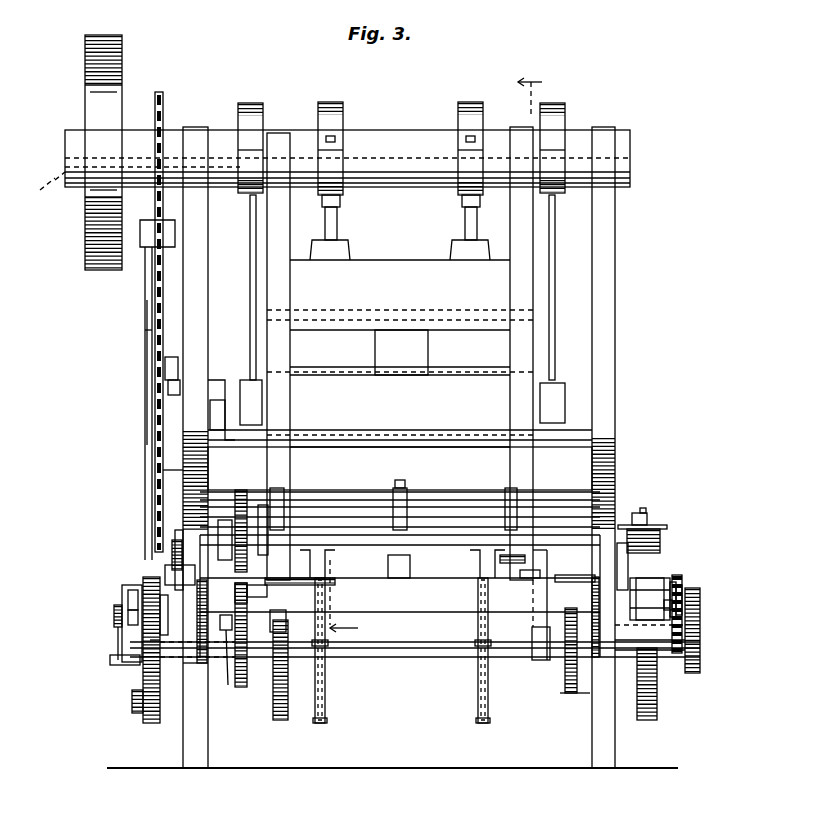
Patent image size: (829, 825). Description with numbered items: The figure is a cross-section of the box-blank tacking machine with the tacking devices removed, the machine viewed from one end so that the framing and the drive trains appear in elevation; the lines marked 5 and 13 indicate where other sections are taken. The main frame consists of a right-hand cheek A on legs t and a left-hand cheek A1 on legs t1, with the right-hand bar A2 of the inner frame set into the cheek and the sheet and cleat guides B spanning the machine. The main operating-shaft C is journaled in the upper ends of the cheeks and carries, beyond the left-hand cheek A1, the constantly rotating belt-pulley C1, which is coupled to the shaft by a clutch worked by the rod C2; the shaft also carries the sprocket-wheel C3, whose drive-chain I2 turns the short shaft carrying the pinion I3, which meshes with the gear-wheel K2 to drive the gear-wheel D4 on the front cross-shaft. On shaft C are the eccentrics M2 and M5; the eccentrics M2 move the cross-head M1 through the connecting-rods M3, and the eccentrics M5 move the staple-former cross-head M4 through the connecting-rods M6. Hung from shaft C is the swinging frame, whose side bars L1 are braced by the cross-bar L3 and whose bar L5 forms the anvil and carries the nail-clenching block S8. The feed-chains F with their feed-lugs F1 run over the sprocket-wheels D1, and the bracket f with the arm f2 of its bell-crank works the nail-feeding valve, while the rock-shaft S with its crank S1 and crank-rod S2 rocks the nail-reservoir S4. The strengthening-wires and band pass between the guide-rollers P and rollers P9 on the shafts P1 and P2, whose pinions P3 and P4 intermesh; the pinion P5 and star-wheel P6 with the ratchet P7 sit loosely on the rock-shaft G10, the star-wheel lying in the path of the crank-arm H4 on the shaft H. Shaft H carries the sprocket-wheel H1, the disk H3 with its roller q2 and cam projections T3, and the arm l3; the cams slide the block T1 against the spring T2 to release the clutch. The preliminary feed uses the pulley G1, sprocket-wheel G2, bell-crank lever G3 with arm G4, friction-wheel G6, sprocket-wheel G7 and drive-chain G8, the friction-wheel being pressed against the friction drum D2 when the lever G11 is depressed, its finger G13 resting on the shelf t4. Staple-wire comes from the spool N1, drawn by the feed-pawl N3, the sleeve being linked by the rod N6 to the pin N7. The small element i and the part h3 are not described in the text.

The main operating-shaft C is at (395, 145).
The belt-pulley C1 is at (133, 62).
The rod C2 is at (145, 322).
The sprocket-wheel C3 is at (162, 105).
The drive connection i is at (47, 192).
The drive-chain I2 is at (147, 296).
The pinion I3 is at (264, 621).
The right-hand cheek A is at (621, 300).
The left-hand cheek A1 is at (208, 280).
The right-hand bar A2 is at (564, 641).
The eccentrics M2 is at (402, 133).
The eccentrics M5 is at (399, 134).
The connecting-rods M6 is at (338, 218).
The connecting-rods M3 is at (250, 300).
The cross-head M4 is at (400, 295).
The cross-head M1 is at (400, 391).
The section line 5 is at (530, 85).
The nail-reservoir S4 is at (401, 352).
The crank S1 is at (165, 370).
The rock-shaft S is at (168, 390).
The crank-rod S2 is at (160, 468).
The nail-clenching block S8 is at (392, 582).
The arm f2 is at (205, 412).
The bracket f is at (221, 417).
The side bars L1 is at (296, 405).
The cross-bar L3 is at (400, 468).
The bar L5 is at (400, 596).
The guide-rollers P is at (400, 509).
The shaft P1 is at (452, 490).
The shaft P2 is at (475, 509).
The pinion P3 is at (241, 490).
The pinion P4 is at (262, 505).
The pinion P5 is at (253, 584).
The star-wheel P6 is at (218, 522).
The ratchet P7 is at (189, 547).
The rollers P9 is at (402, 486).
The lever G11 is at (175, 545).
The swinging finger G13 is at (165, 573).
The rock-shaft G10 is at (481, 558).
The arm G4 is at (650, 575).
The friction-wheel G6 is at (676, 585).
The drive-chain G8 is at (672, 600).
The sprocket-wheel G7 is at (682, 590).
The pulley G1 is at (700, 617).
The sprocket-wheel G2 is at (700, 642).
The bell-crank lever G3 is at (660, 657).
The rod N6 is at (635, 513).
The pin N7 is at (648, 508).
The wire-carrying spool N1 is at (655, 525).
The feed-pawl N3 is at (660, 540).
The feed-lugs F1 is at (478, 580).
The feed-chains F is at (325, 712).
The sheet and cleat guides B is at (430, 589).
The section line 13 is at (344, 605).
The shaft H is at (390, 660).
The sprocket-wheel H1 is at (571, 641).
The disk H3 is at (143, 672).
The crank-arm H4 is at (227, 663).
The bar h3 is at (198, 645).
The sprocket-wheels D1 is at (325, 690).
The gear-wheel D4 is at (289, 680).
The friction drum D2 is at (657, 717).
The gear-wheel K2 is at (253, 647).
The cam projections T3 is at (122, 592).
The spring T2 is at (114, 615).
The sliding block T1 is at (118, 640).
The legs t is at (590, 700).
The legs t1 is at (208, 732).
The shelf t4 is at (172, 615).
The roller q2 is at (150, 642).
The arm l3 is at (535, 660).